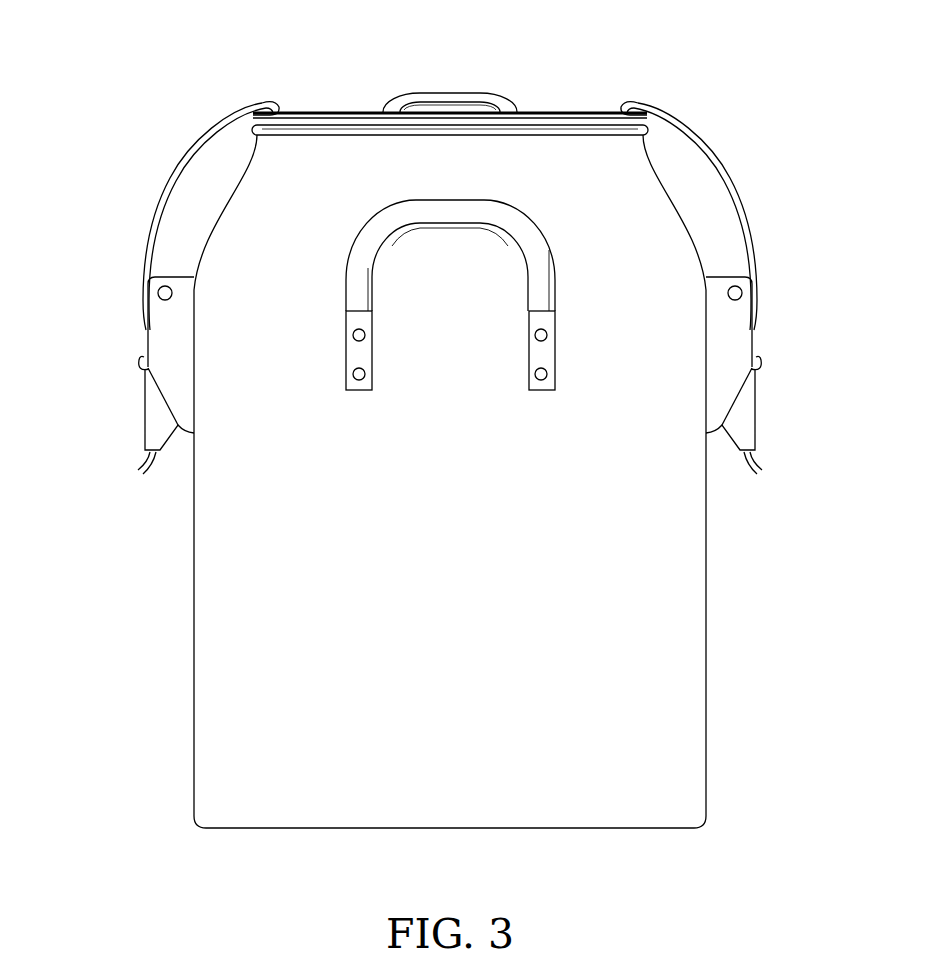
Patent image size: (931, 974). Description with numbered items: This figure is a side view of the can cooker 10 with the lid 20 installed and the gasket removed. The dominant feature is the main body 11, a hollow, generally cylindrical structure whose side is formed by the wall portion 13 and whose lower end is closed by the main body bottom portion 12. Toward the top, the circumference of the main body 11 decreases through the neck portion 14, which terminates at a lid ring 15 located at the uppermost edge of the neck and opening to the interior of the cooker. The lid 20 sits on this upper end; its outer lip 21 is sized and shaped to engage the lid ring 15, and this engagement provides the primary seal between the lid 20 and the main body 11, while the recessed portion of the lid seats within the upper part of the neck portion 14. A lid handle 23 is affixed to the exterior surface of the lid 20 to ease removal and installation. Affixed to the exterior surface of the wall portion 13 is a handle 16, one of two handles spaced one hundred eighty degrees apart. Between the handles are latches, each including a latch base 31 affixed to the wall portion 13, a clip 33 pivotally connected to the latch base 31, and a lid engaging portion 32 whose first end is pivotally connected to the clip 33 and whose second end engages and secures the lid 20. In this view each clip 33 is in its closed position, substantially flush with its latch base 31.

The can cooker 10 is at (158, 48).
The main body 11 is at (146, 678).
The main body bottom portion 12 is at (606, 828).
The wall portion 13 is at (707, 668).
The neck portion 14 is at (680, 212).
The lid ring 15 is at (331, 137).
The handle 16 is at (446, 226).
The lid 20 is at (328, 100).
The outer lip 21 is at (252, 126).
The lid handle 23 is at (456, 92).
The latch base 31 is at (178, 357).
The lid engaging portion 32 is at (173, 168).
The clip 33 is at (155, 413).